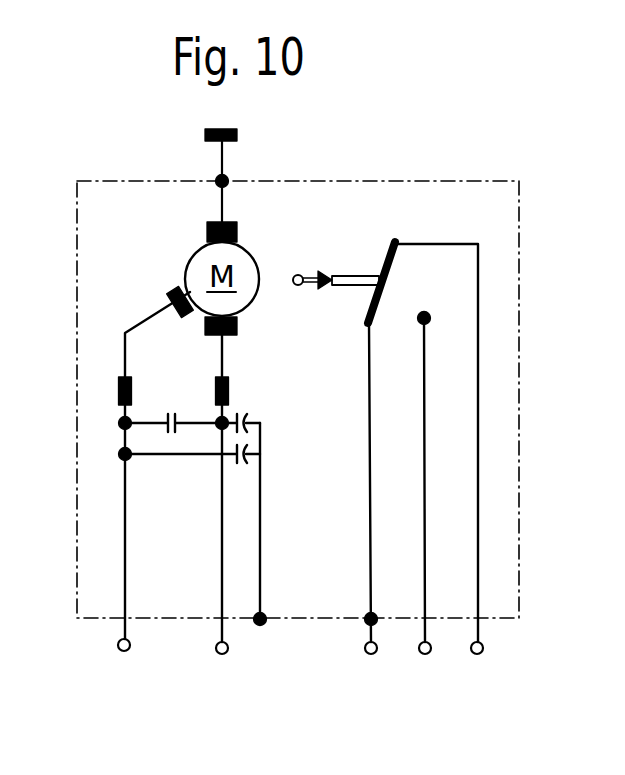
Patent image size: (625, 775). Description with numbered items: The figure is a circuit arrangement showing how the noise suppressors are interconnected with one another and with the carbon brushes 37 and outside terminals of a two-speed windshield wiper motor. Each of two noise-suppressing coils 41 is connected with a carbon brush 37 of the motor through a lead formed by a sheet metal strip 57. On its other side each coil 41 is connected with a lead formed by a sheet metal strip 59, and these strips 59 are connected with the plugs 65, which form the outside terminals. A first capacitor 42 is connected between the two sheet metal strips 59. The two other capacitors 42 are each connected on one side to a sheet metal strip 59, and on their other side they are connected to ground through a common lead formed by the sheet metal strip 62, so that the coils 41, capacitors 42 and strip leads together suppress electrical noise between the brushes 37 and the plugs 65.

The brushes 37 is at (177, 292).
The sheet metal strip 57 is at (125, 333).
The noise-suppressing coil 41 is at (118, 386).
The capacitor 42 is at (168, 430).
The sheet metal strip 59 is at (125, 456).
The sheet metal strip 62 is at (260, 522).
The plug 65 is at (118, 645).